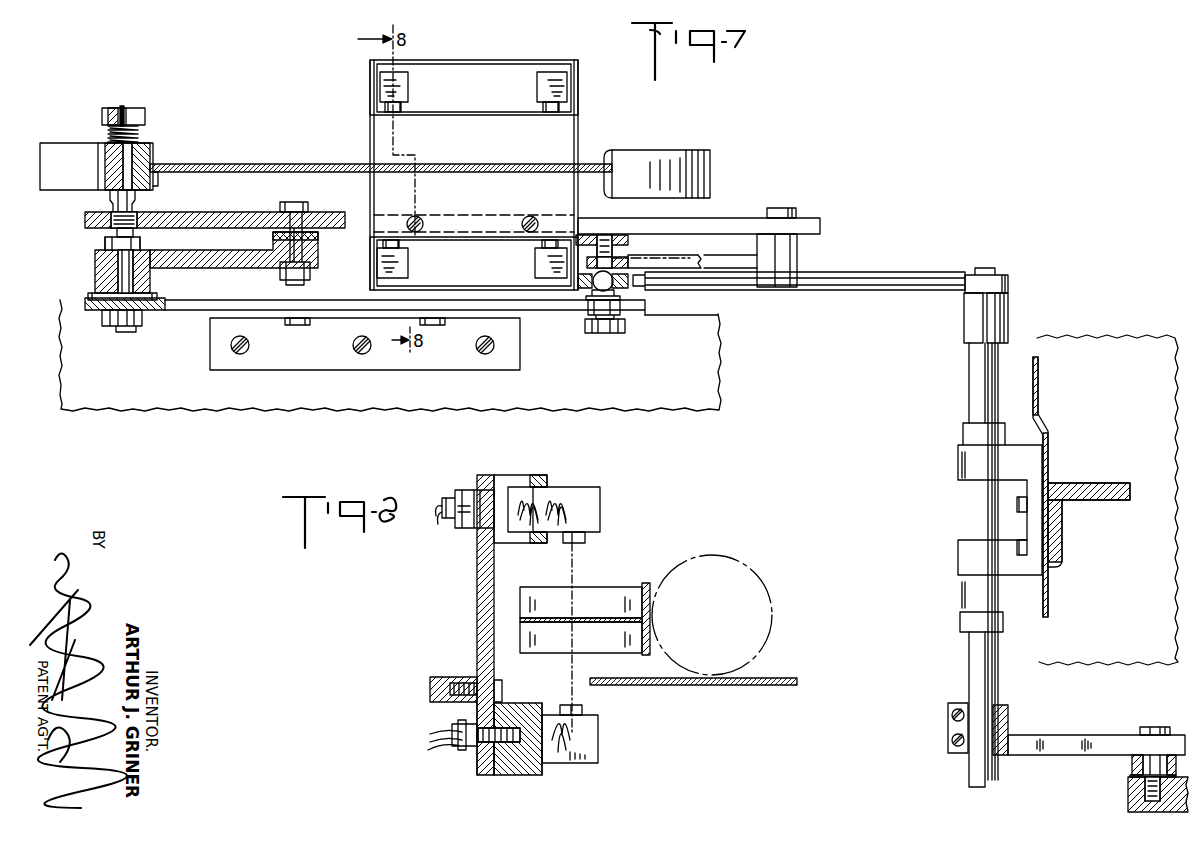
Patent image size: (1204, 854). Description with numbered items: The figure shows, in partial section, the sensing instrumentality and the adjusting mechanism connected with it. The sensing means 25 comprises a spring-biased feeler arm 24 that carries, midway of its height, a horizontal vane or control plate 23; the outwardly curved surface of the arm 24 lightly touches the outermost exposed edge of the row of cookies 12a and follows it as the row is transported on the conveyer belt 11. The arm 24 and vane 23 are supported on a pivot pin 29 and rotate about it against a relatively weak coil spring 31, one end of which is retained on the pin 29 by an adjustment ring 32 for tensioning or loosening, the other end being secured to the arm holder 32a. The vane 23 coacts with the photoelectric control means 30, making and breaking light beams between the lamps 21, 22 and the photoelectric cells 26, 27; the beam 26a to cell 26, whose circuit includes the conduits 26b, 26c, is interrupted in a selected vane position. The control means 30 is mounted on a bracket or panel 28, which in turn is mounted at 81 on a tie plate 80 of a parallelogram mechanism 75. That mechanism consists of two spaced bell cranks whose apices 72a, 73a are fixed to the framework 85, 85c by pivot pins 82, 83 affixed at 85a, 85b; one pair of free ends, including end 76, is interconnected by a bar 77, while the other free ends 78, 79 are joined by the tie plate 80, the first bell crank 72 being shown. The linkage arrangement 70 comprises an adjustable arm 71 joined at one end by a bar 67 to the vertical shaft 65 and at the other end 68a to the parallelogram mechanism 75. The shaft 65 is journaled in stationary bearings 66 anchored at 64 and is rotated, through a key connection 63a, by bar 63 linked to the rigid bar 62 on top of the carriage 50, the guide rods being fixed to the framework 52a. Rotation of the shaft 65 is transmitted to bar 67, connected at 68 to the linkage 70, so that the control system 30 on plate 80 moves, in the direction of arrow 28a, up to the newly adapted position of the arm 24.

In FIG. 8, the conveyer belt 11 is at (650, 688).
In FIG. 8, the row of cookies 12a is at (724, 556).
In FIG. 7, the lamp 21 is at (378, 262).
In FIG. 8, the lamp 21 is at (552, 766).
In FIG. 7, the lamp 22 is at (535, 262).
In FIG. 7, the vane or control plate 23 is at (252, 164).
In FIG. 8, the vane or control plate 23 is at (598, 616).
In FIG. 7, the feeler arm 24 is at (692, 152).
In FIG. 8, the feeler arm 24 is at (646, 583).
In FIG. 7, the sensing means 25 is at (662, 148).
In FIG. 7, the photoelectric cell 26 is at (408, 84).
In FIG. 8, the photoelectric cell 26 is at (572, 496).
In FIG. 8, the light beam 26a is at (570, 644).
In FIG. 8, the conduit 26b is at (442, 504).
In FIG. 8, the conduit 26c is at (446, 526).
In FIG. 7, the photoelectric cell 27 is at (537, 84).
In FIG. 7, the bracket or panel 28 is at (566, 143).
In FIG. 8, the bracket or panel 28 is at (480, 588).
In FIG. 8, the arrow 28a is at (553, 578).
In FIG. 7, the pivot pin 29 is at (120, 160).
In FIG. 7, the photoelectric control means 30 is at (581, 110).
In FIG. 8, the photoelectric control means 30 is at (604, 506).
In FIG. 7, the coil spring 31 is at (138, 132).
In FIG. 7, the adjustment ring 32 is at (126, 112).
In FIG. 7, the arm holder 32a is at (152, 148).
In FIG. 7, the carriage 50 is at (1130, 792).
In FIG. 7, the framework 52a is at (1038, 404).
In FIG. 7, the rigid bar 62 is at (1132, 766).
In FIG. 7, the bar 63 is at (1058, 747).
In FIG. 7, the key connection 63a is at (1000, 662).
In FIG. 7, the anchoring point 64 is at (1015, 549).
In FIG. 7, the vertical shaft 65 is at (972, 364).
In FIG. 7, the stationary bearings 66 is at (958, 455).
In FIG. 7, the bar 67 is at (1008, 316).
In FIG. 7, the connection 68 is at (1008, 286).
In FIG. 7, the end of adjustable arm 68a is at (590, 292).
In FIG. 7, the linkage arrangement 70 is at (808, 197).
In FIG. 7, the adjustable arm 71 is at (852, 284).
In FIG. 7, the bell crank 72 is at (192, 258).
In FIG. 7, the apex of bell crank 72a is at (108, 257).
In FIG. 7, the apex of bell crank 73a is at (640, 264).
In FIG. 7, the parallelogram mechanism 75 is at (238, 212).
In FIG. 7, the free end of bell crank 76 is at (622, 260).
In FIG. 7, the bar 77 is at (590, 236).
In FIG. 7, the free end of bell crank 78 is at (306, 240).
In FIG. 7, the free end of bell crank 79 is at (780, 208).
In FIG. 7, the tie plate 80 is at (85, 221).
In FIG. 8, the tie plate 80 is at (442, 680).
In FIG. 7, the mounting point 81 is at (528, 216).
In FIG. 8, the mounting point 81 is at (502, 696).
In FIG. 7, the pivot pin 82 is at (118, 267).
In FIG. 7, the pivot pin 83 is at (594, 312).
In FIG. 7, the machine framework 85 is at (180, 305).
In FIG. 7, the fixing point 85a is at (106, 316).
In FIG. 7, the fixing point 85b is at (608, 333).
In FIG. 7, the framework 85c is at (668, 380).